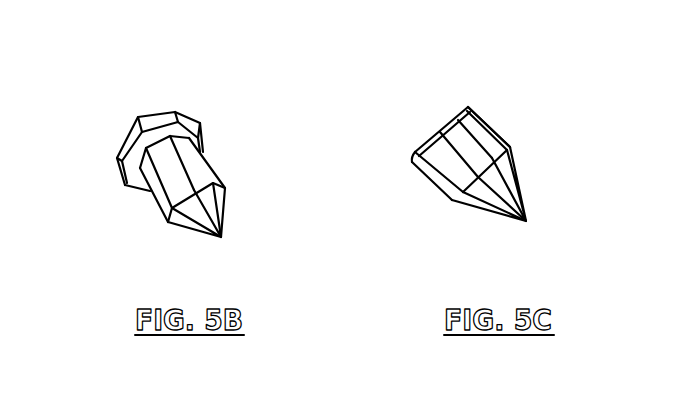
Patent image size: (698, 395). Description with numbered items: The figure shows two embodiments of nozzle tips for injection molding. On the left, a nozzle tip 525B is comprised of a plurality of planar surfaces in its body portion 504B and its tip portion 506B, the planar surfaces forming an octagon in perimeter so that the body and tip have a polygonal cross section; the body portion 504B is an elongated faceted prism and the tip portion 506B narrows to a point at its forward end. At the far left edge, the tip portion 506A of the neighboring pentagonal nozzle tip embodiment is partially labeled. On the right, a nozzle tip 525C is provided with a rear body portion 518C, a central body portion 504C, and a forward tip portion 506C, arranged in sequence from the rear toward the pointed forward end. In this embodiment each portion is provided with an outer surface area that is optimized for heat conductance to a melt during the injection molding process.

In FIG. 5B, the nozzle tip 525B is at (125, 114).
In FIG. 5B, the body portion 504B is at (218, 159).
In FIG. 5B, the tip portion 506B is at (230, 215).
In FIG. 5B, the tip portion 506A is at (18, 228).
In FIG. 5C, the nozzle tip 525C is at (425, 116).
In FIG. 5C, the rear body portion 518C is at (502, 121).
In FIG. 5C, the central body portion 504C is at (522, 163).
In FIG. 5C, the forward tip portion 506C is at (533, 211).